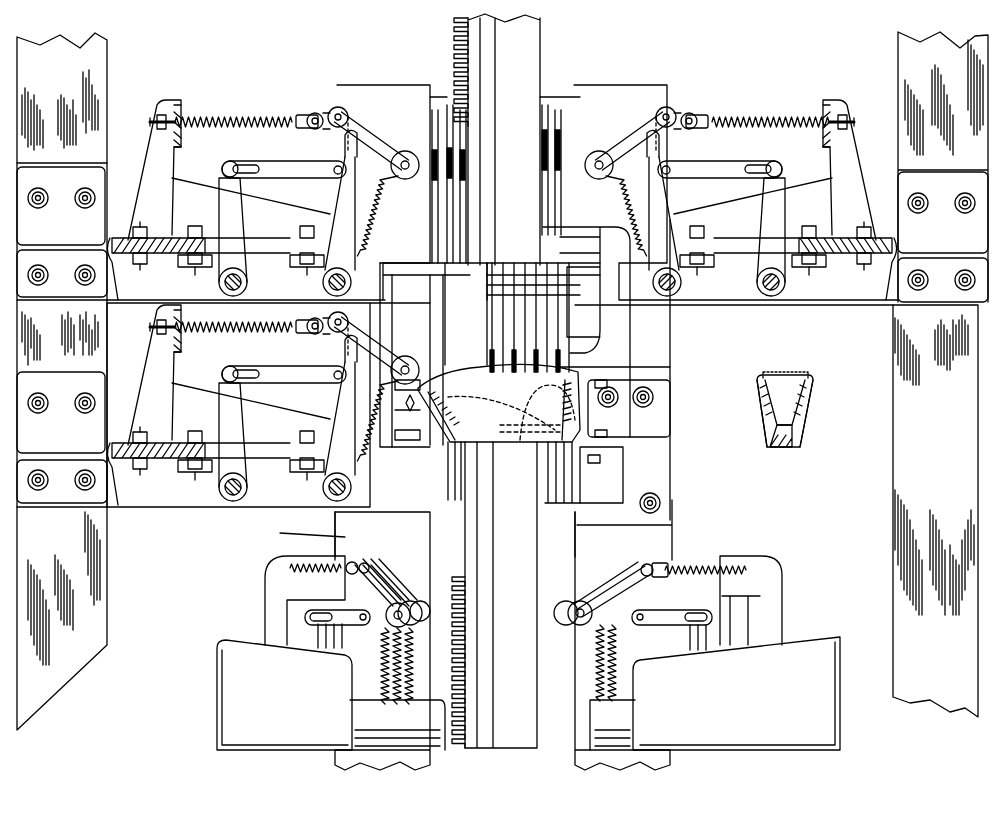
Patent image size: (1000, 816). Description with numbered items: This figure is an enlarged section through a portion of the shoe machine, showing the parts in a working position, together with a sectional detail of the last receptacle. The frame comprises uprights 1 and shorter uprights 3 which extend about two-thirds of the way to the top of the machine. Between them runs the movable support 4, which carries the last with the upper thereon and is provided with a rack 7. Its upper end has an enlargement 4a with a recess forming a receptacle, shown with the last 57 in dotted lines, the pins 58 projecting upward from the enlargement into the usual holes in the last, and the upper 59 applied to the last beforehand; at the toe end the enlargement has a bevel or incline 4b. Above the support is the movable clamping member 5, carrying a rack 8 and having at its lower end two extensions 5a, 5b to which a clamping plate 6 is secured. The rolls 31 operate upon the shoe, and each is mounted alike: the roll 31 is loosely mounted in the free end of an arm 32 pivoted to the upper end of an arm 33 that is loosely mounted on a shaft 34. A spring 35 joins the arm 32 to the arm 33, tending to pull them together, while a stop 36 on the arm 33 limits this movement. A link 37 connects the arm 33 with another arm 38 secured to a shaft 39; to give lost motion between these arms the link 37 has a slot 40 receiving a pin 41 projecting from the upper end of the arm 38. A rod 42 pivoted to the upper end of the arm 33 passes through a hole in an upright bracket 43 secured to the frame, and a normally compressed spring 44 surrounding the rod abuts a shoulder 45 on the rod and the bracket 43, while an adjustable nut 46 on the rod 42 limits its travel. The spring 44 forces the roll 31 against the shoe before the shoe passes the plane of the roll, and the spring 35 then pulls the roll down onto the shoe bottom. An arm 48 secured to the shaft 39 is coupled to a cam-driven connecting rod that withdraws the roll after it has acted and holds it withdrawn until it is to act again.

In FIG. 4, the upright 1 is at (93, 585).
In FIG. 4, the upright 3 is at (693, 531).
In FIG. 4, the movable support 4 is at (518, 562).
In FIG. 4, the enlargement 4a is at (480, 425).
In FIG. 10, the enlargement 4a is at (758, 419).
In FIG. 4, the bevel or incline 4b is at (440, 402).
In FIG. 4, the movable clamping member 5 is at (525, 83).
In FIG. 4, the extension 5a is at (455, 322).
In FIG. 4, the extension 5b is at (618, 333).
In FIG. 4, the clamping plate 6 is at (478, 360).
In FIG. 10, the clamping plate 6 is at (797, 376).
In FIG. 4, the rack 7 is at (460, 692).
In FIG. 4, the rack 8 is at (452, 50).
In FIG. 4, the roll 31 is at (410, 183).
In FIG. 4, the arm 32 is at (365, 137).
In FIG. 4, the arm 33 is at (335, 225).
In FIG. 4, the shaft 34 is at (328, 290).
In FIG. 4, the spring 35 is at (372, 217).
In FIG. 4, the stop 36 is at (350, 148).
In FIG. 4, the link 37 is at (317, 174).
In FIG. 4, the arm 38 is at (225, 227).
In FIG. 4, the shaft 39 is at (225, 287).
In FIG. 4, the slot 40 is at (254, 166).
In FIG. 4, the pin 41 is at (224, 171).
In FIG. 4, the rod 42 is at (208, 112).
In FIG. 4, the upright bracket 43 is at (170, 212).
In FIG. 4, the spring 44 is at (250, 119).
In FIG. 4, the shoulder 45 is at (303, 113).
In FIG. 4, the adjustable nut 46 is at (163, 118).
In FIG. 4, the arm 48 is at (570, 462).
In FIG. 4, the last 57 is at (522, 412).
In FIG. 10, the last 57 is at (795, 432).
In FIG. 4, the pin 58 is at (547, 408).
In FIG. 4, the upper 59 is at (578, 400).
In FIG. 10, the upper 59 is at (802, 389).